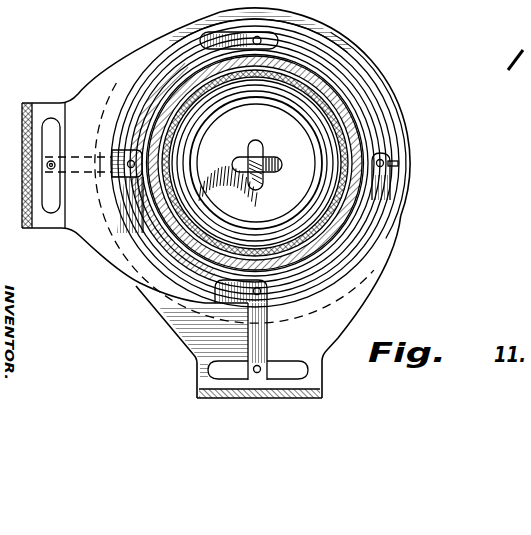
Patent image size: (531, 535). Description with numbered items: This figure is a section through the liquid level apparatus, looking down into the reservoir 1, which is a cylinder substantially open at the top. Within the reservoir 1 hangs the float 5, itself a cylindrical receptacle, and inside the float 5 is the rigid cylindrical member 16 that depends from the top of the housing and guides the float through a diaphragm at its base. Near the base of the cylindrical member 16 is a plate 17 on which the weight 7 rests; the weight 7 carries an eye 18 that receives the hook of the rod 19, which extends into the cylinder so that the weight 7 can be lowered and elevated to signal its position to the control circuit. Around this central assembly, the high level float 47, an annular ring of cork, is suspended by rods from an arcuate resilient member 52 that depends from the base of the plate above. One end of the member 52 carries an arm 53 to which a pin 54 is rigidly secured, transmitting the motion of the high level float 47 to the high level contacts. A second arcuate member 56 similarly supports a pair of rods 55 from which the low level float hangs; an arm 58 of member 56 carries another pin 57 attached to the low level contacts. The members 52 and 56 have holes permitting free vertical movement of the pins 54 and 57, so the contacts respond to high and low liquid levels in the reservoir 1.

The reservoir 1 is at (344, 46).
The float 5 is at (366, 124).
The weight 7 is at (255, 163).
The rigid cylindrical member 16 is at (350, 118).
The plate 17 is at (320, 110).
The eye 18 is at (268, 171).
The rod 19 is at (263, 156).
The high level float 47 is at (377, 133).
The arcuate resilient member 52 is at (111, 68).
The arm 53 is at (270, 337).
The pin 54 is at (258, 398).
The rods 55 is at (181, 24).
The second arcuate member 56 is at (371, 289).
The pin 57 is at (47, 118).
The arm 58 is at (88, 157).